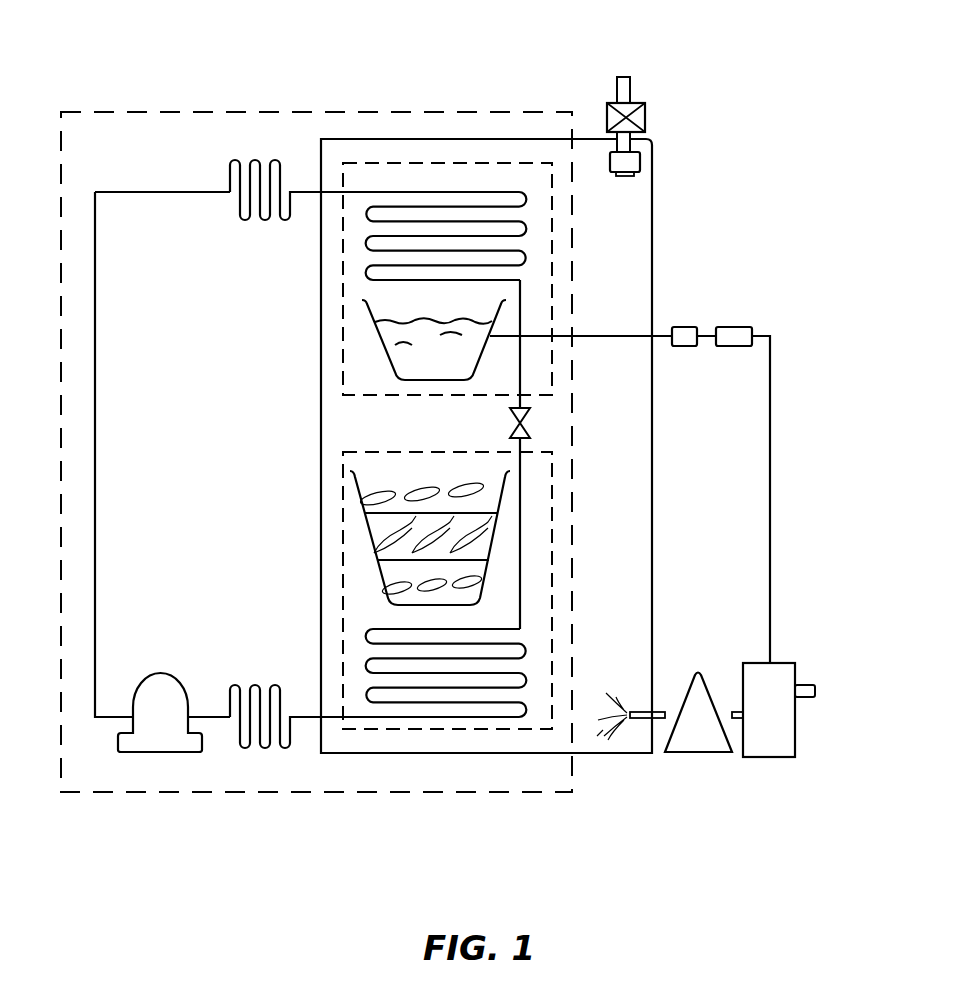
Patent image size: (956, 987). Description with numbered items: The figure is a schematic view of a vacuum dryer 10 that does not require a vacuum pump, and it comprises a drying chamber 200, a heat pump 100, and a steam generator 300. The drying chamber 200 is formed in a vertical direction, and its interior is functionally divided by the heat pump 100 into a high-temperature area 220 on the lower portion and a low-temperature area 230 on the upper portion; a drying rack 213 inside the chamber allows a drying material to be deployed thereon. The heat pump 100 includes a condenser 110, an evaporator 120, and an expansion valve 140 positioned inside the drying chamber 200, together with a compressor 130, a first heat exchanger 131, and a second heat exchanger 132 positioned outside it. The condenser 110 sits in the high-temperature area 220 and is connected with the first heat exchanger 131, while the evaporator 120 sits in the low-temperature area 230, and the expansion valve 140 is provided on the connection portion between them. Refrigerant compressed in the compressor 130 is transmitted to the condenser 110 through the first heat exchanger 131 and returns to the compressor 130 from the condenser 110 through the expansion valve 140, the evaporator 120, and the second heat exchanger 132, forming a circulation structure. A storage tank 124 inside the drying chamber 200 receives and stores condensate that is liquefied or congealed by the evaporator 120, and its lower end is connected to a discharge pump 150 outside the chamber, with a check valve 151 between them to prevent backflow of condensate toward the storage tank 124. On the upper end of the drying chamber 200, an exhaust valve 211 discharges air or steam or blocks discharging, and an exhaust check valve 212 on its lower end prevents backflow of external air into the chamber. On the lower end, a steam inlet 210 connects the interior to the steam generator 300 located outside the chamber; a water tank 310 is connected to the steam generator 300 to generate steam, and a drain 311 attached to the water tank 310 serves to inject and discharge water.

The vacuum dryer 10 is at (793, 26).
The heat pump 100 is at (125, 110).
The condenser 110 is at (530, 650).
The evaporator 120 is at (527, 198).
The storage tank 124 is at (368, 340).
The compressor 130 is at (160, 753).
The first heat exchanger 131 is at (243, 750).
The second heat exchanger 132 is at (235, 160).
The expansion valve 140 is at (523, 420).
The discharge pump 150 is at (733, 336).
The check valve 151 is at (685, 336).
The drying chamber 200 is at (524, 139).
The steam inlet 210 is at (640, 722).
The exhaust valve 211 is at (630, 90).
The exhaust check valve 212 is at (641, 162).
The drying rack 213 is at (506, 500).
The high-temperature area 220 is at (440, 730).
The low-temperature area 230 is at (424, 163).
The steam generator 300 is at (702, 737).
The water tank 310 is at (770, 732).
The drain 311 is at (806, 700).